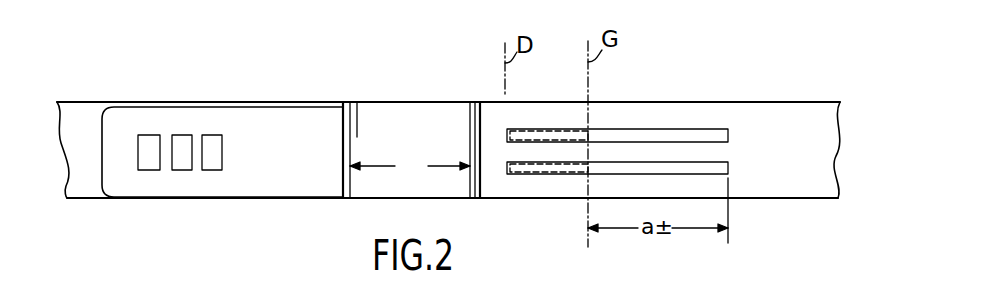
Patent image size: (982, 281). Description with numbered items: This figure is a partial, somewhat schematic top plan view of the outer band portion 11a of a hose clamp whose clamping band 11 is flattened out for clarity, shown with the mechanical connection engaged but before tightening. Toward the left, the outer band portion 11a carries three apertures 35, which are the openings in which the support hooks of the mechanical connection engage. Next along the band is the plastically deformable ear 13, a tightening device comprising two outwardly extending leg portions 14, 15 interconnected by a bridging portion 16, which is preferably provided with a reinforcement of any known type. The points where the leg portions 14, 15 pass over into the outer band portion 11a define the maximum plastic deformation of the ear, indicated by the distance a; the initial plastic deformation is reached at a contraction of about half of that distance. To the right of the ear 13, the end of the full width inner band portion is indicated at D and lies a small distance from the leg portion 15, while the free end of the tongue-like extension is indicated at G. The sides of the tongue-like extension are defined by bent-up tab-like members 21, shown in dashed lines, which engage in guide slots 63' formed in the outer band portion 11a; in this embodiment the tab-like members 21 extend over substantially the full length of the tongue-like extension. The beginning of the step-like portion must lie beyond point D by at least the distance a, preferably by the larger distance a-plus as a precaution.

The clamping band 11 is at (797, 108).
The outer band portion 11a is at (255, 117).
The ear 13 is at (378, 97).
The leg portion 14 is at (343, 136).
The leg portion 15 is at (481, 183).
The bridging portion 16 is at (427, 115).
The tab-like members 21 is at (528, 130).
The apertures 35 is at (212, 135).
The guide slots 63' is at (648, 151).